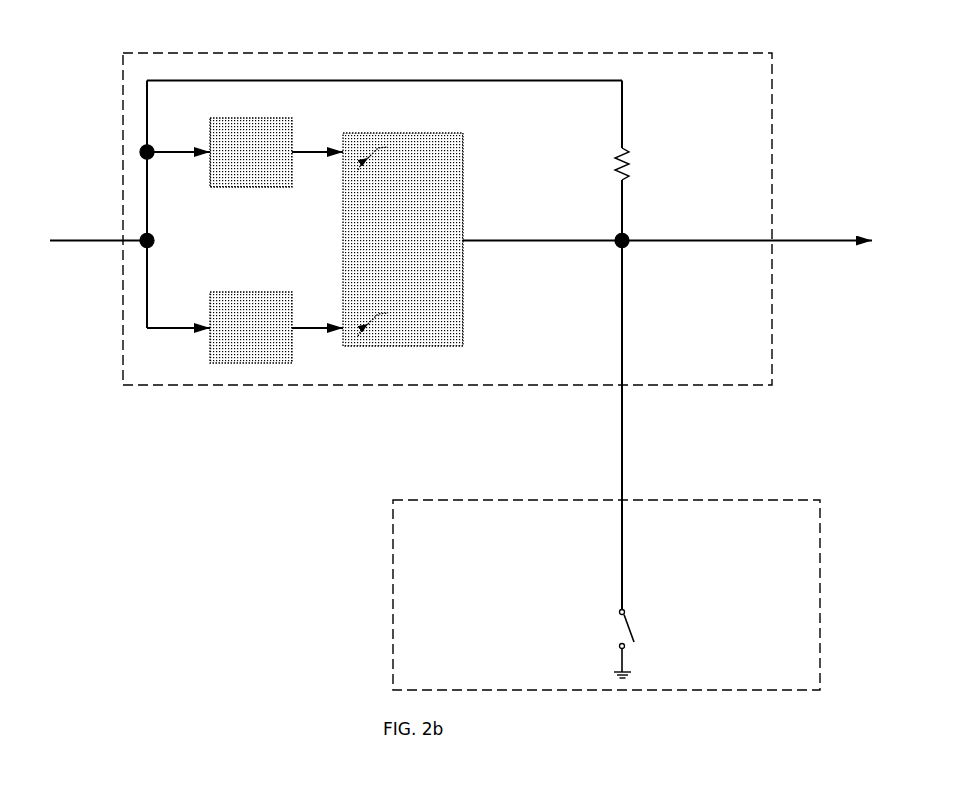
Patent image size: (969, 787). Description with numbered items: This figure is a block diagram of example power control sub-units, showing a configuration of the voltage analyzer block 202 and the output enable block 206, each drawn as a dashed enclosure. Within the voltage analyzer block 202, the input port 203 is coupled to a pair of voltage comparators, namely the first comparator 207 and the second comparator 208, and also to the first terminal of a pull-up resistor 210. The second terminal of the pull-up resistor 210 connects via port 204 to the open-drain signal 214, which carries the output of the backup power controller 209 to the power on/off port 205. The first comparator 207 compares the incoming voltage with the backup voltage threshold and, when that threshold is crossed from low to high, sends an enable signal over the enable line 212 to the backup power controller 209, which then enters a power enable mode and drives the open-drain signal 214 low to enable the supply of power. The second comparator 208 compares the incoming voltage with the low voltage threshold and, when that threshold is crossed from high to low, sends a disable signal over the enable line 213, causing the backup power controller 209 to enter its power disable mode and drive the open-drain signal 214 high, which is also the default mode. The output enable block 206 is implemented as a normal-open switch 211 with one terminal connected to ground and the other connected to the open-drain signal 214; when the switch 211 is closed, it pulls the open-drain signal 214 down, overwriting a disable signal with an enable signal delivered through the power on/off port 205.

The voltage analyzer block 202 is at (448, 53).
The input port 203 is at (122, 242).
The port 204 is at (618, 398).
The power on/off port 205 is at (832, 248).
The output enable block 206 is at (665, 500).
The first comparator 207 is at (251, 152).
The second comparator 208 is at (251, 327).
The backup power controller 209 is at (403, 239).
The pull-up resistor 210 is at (639, 158).
The normal-open switch 211 is at (609, 631).
The enable line 212 is at (303, 150).
The enable line 213 is at (306, 325).
The open-drain signal 214 is at (530, 239).